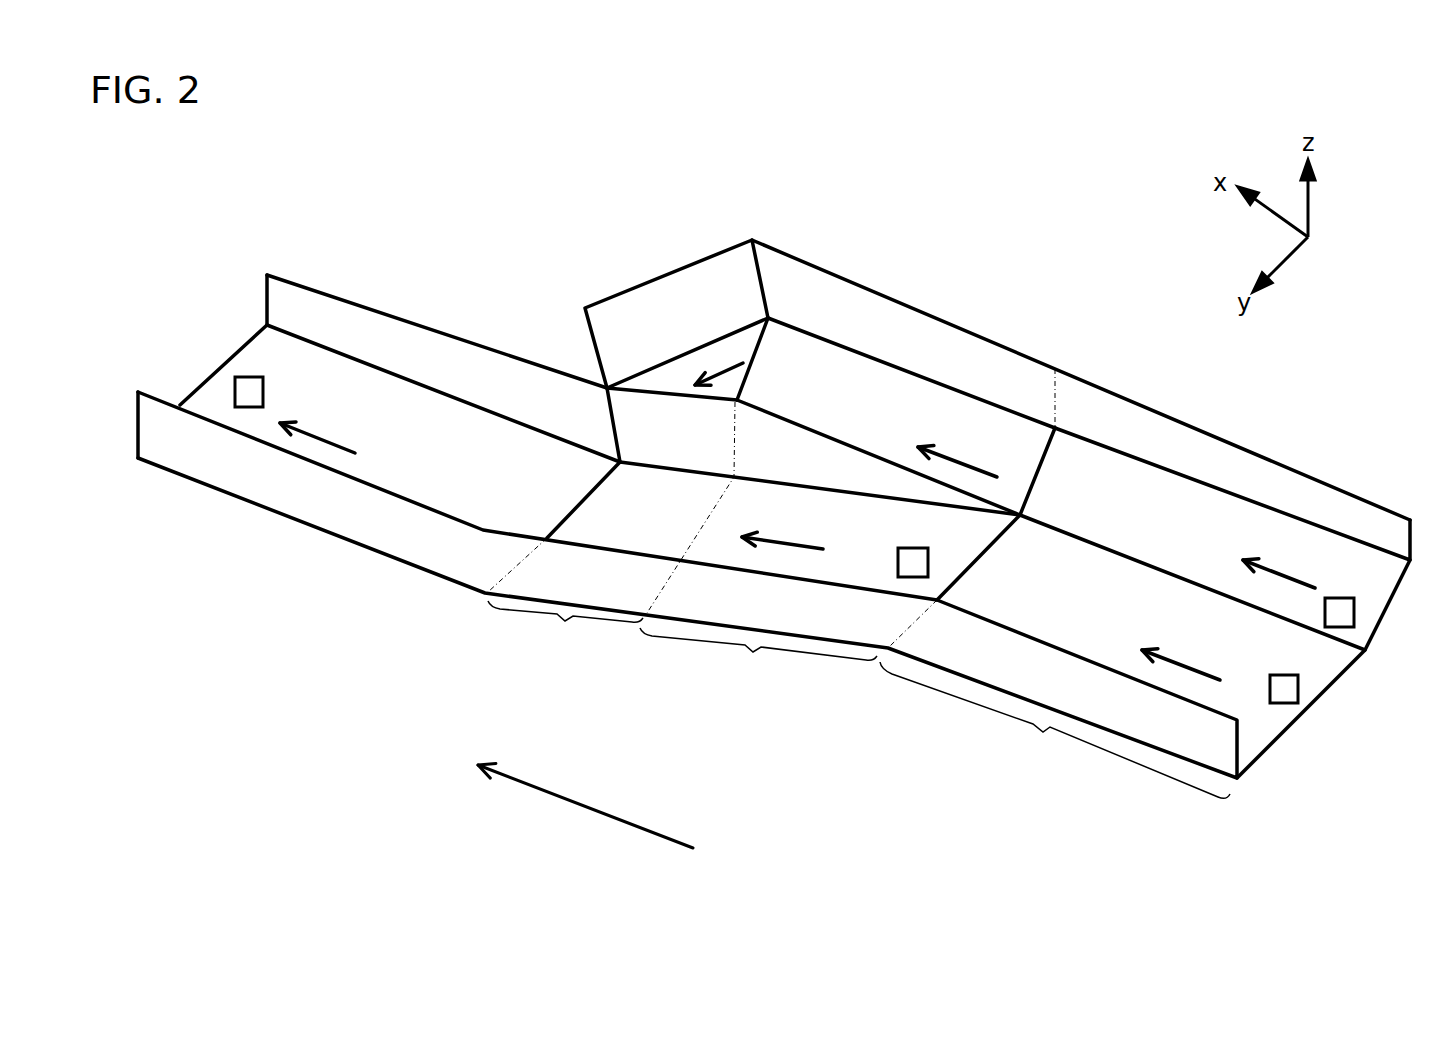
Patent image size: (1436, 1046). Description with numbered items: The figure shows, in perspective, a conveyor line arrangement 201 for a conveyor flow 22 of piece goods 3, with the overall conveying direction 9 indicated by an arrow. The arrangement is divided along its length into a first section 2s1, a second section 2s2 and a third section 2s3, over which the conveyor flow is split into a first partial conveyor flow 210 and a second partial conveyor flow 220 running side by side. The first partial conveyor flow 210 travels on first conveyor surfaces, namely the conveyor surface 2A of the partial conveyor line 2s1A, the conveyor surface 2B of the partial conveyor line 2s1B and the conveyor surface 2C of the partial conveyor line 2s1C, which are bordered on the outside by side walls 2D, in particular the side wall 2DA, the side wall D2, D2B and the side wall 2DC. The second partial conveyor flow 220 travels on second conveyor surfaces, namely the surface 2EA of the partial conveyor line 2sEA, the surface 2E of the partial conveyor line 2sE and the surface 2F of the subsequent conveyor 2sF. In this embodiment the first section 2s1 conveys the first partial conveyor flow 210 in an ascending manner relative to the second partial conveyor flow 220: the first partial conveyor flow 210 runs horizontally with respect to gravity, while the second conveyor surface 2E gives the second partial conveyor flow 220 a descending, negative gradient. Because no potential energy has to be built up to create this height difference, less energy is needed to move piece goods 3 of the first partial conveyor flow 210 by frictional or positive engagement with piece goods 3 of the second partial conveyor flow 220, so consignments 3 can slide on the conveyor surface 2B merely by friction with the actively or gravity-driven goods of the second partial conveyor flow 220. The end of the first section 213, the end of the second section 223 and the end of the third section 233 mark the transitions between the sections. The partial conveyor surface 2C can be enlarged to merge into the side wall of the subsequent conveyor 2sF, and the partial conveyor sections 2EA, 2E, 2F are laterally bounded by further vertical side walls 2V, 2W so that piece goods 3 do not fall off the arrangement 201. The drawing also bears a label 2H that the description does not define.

The conveyor line arrangement 201 is at (765, 448).
The vertical side wall 2V is at (428, 304).
The vertical side wall 2W is at (678, 557).
The second conveyor surface 2F is at (400, 431).
The subsequent conveyor 2sF is at (400, 431).
The second conveyor surface 2E is at (820, 531).
The partial conveyor line 2sE is at (820, 531).
The second conveyor surface 2EA is at (1187, 677).
The partial conveyor line 2sEA is at (1187, 677).
The transition portion 2H is at (813, 451).
The end of the second section of the first partial conveyor flow 223 is at (672, 417).
The end of the first section of the first partial conveyor flow 213 is at (786, 359).
The end of the third section 233 is at (1072, 471).
The first conveyor surface 2C is at (650, 300).
The partial conveyor line 2s1C is at (650, 300).
The first conveyor surface 2B is at (871, 412).
The partial conveyor line 2s1B is at (871, 412).
The first conveyor surface 2A is at (1215, 574).
The partial conveyor line 2s1A is at (1215, 574).
The side wall 2D is at (997, 366).
The side wall 2DC is at (707, 280).
The side wall 2DA is at (1232, 480).
The side wall D2 is at (1081, 380).
The side wall D2B is at (1081, 380).
The piece good 3 is at (817, 527).
The conveyor flow 22 is at (793, 540).
The first partial conveyor flow 210 is at (992, 352).
The second partial conveyor flow 220 is at (989, 592).
The first section 2s1 is at (758, 659).
The second section 2s2 is at (565, 628).
The third section 2s3 is at (1055, 730).
The conveying direction 9 is at (585, 798).